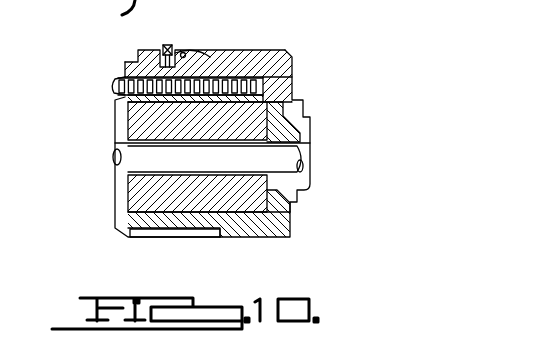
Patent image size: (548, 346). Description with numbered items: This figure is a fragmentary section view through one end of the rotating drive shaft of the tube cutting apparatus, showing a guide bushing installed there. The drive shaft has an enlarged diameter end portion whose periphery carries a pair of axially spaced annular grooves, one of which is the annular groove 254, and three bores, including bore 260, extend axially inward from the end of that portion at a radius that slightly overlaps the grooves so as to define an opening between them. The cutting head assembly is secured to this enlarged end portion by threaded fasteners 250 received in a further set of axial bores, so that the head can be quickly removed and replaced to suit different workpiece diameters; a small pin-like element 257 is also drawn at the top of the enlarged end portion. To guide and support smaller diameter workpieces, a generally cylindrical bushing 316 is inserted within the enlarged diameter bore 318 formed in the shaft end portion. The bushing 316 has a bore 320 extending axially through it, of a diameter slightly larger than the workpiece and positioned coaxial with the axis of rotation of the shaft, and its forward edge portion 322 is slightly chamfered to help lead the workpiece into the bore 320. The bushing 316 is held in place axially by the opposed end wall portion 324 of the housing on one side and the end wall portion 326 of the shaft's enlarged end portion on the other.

The threaded fasteners 250 is at (113, 89).
The annular groove 254 is at (145, 66).
The pin 257 is at (210, 62).
The bore 260 is at (167, 231).
The bushing 316 is at (283, 80).
The enlarged diameter bore 318 is at (184, 205).
The bore 320 is at (155, 170).
The forward edge portion 322 is at (285, 178).
The end wall portion 324 is at (118, 122).
The end wall portion 326 is at (262, 125).